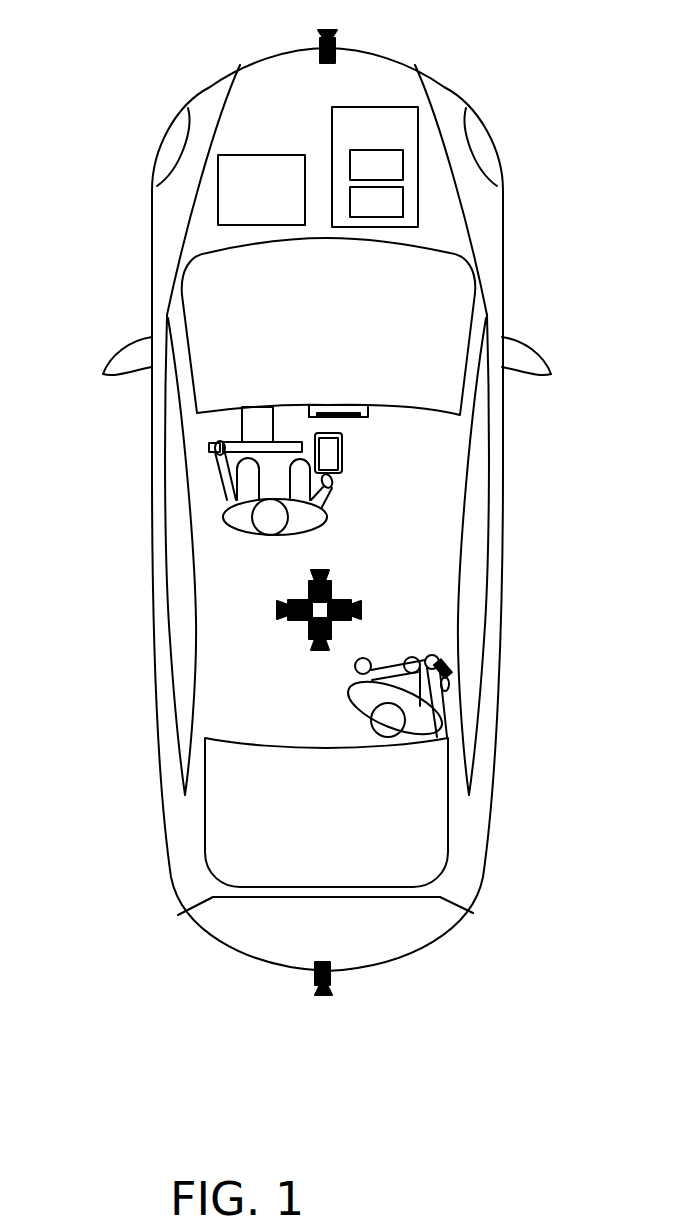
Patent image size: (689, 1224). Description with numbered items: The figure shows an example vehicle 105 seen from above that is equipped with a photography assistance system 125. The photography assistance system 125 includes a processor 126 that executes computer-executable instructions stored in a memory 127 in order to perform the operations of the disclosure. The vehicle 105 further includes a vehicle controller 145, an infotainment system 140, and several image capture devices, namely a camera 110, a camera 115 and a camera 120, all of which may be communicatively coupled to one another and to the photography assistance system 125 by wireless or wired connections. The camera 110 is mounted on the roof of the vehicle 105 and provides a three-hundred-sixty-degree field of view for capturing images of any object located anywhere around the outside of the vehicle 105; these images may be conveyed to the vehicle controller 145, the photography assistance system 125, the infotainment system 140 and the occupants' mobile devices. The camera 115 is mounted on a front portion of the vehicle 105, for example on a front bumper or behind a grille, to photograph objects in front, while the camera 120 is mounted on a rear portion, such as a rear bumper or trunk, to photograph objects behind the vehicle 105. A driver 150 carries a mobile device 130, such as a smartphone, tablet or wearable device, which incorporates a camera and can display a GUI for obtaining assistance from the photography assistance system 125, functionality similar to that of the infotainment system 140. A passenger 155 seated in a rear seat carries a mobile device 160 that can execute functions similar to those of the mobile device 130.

The vehicle 105 is at (133, 95).
The camera 110 is at (286, 631).
The camera 115 is at (329, 63).
The camera 120 is at (330, 973).
The photography assistance system 125 is at (409, 137).
The processor 126 is at (395, 174).
The memory 127 is at (395, 211).
The mobile device 130 is at (343, 440).
The infotainment system 140 is at (330, 404).
The vehicle controller 145 is at (281, 199).
The driver 150 is at (283, 535).
The passenger 155 is at (357, 705).
The mobile device 160 is at (443, 662).